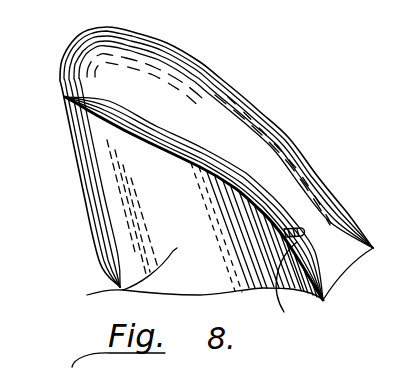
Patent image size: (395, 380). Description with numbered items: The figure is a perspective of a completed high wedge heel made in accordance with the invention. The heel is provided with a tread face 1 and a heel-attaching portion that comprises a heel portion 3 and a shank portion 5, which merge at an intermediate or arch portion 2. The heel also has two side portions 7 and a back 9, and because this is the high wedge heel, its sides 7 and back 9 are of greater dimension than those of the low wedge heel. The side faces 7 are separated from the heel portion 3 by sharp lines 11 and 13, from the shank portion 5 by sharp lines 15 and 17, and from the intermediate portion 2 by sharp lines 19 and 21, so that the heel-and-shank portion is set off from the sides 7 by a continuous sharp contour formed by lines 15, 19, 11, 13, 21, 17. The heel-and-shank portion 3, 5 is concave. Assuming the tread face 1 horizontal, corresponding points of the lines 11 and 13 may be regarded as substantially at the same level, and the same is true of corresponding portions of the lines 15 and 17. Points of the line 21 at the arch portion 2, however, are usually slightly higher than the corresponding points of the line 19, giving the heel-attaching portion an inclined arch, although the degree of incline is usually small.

The tread face 1 is at (190, 295).
The intermediate or arch portion 2 is at (281, 163).
The heel portion 3 is at (173, 107).
The shank portion 5 is at (323, 232).
The side portions 7 is at (87, 295).
The back 9 is at (77, 173).
The sharp line 11 is at (133, 147).
The sharp line 13 is at (157, 44).
The sharp line 15 is at (323, 306).
The sharp line 17 is at (342, 218).
The sharp line 19 is at (217, 178).
The sharp line 21 is at (262, 110).